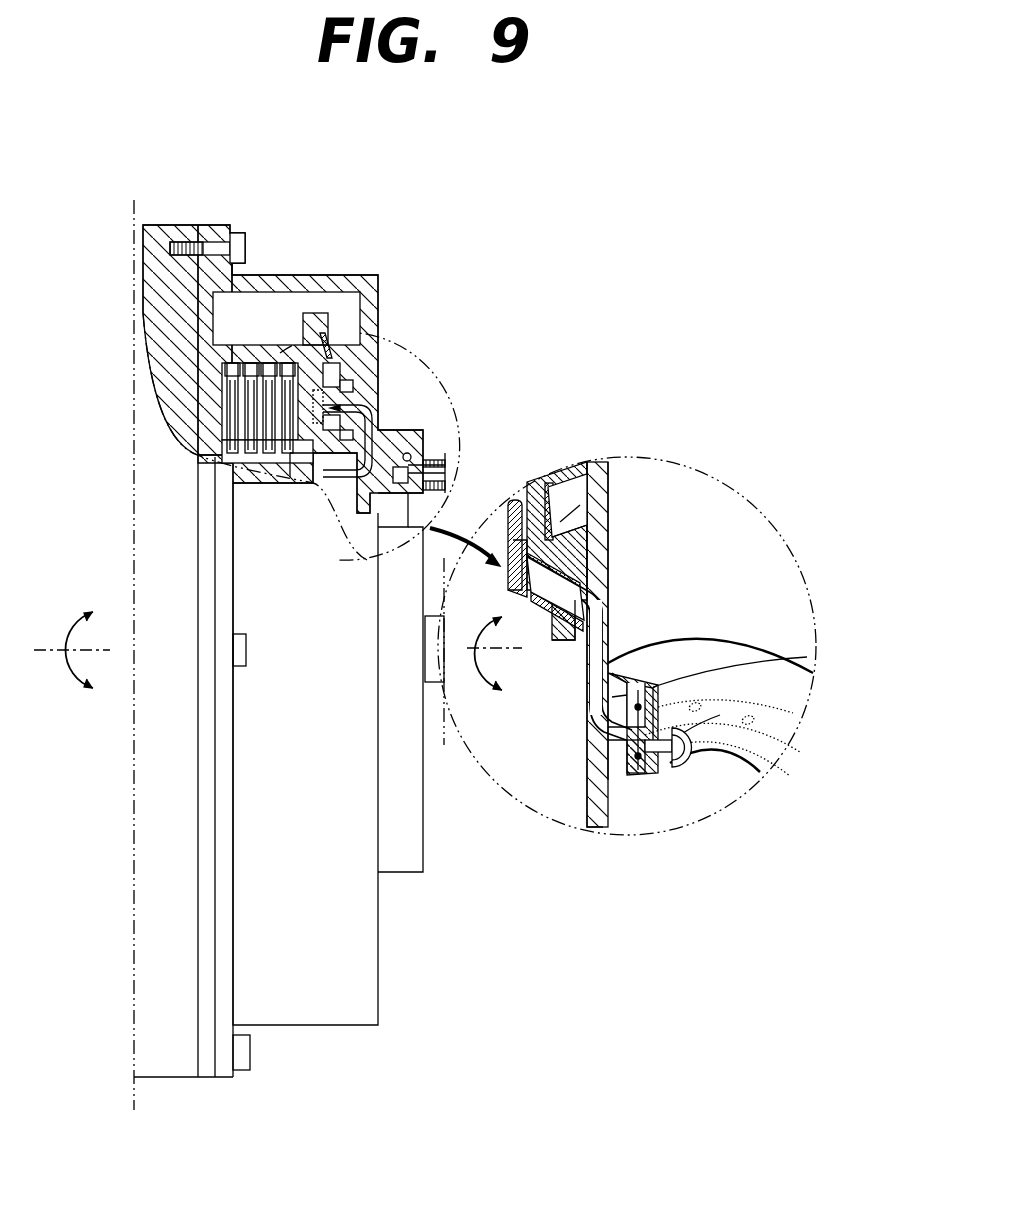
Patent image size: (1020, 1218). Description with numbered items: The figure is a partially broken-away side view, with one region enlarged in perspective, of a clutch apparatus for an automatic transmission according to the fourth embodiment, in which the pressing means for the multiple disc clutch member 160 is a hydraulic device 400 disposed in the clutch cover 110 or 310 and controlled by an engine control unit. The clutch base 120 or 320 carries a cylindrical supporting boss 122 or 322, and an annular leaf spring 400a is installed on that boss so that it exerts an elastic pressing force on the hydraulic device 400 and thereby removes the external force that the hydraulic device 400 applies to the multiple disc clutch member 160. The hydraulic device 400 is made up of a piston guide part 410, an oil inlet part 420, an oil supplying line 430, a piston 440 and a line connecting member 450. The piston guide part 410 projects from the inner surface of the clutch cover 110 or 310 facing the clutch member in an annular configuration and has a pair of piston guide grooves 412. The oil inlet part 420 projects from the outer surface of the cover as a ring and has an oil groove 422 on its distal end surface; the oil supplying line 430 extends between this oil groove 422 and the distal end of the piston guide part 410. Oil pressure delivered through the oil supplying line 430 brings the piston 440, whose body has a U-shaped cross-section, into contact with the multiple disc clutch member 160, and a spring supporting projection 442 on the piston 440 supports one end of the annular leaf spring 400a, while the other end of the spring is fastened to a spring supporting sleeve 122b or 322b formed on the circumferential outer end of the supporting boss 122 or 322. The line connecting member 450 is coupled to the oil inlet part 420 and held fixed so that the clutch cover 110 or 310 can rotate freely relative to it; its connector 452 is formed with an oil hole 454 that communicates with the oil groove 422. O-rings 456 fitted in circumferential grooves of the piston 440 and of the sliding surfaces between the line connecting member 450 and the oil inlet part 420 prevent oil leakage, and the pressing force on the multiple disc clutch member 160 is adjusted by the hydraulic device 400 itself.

The clutch cover 110 is at (394, 644).
The clutch cover 310 is at (371, 304).
The clutch base 120 is at (265, 299).
The clutch base 320 is at (206, 224).
The supporting boss 122 is at (372, 310).
The supporting boss 322 is at (248, 352).
The spring supporting sleeve 122b is at (430, 291).
The spring supporting sleeve 322b is at (323, 348).
The multiple disc clutch member 160 is at (218, 415).
The hydraulic device 400 is at (455, 397).
The annular leaf spring 400a is at (318, 360).
The piston guide part 410 is at (607, 570).
The piston guide grooves 412 is at (590, 590).
The oil inlet part 420 is at (619, 755).
The oil groove 422 is at (632, 768).
The oil supplying line 430 is at (610, 615).
The piston 440 is at (603, 523).
The spring supporting projection 442 is at (576, 581).
The line connecting member 450 is at (767, 644).
The connector 452 is at (670, 767).
The oil hole 454 is at (662, 778).
The O-rings 456 is at (642, 707).